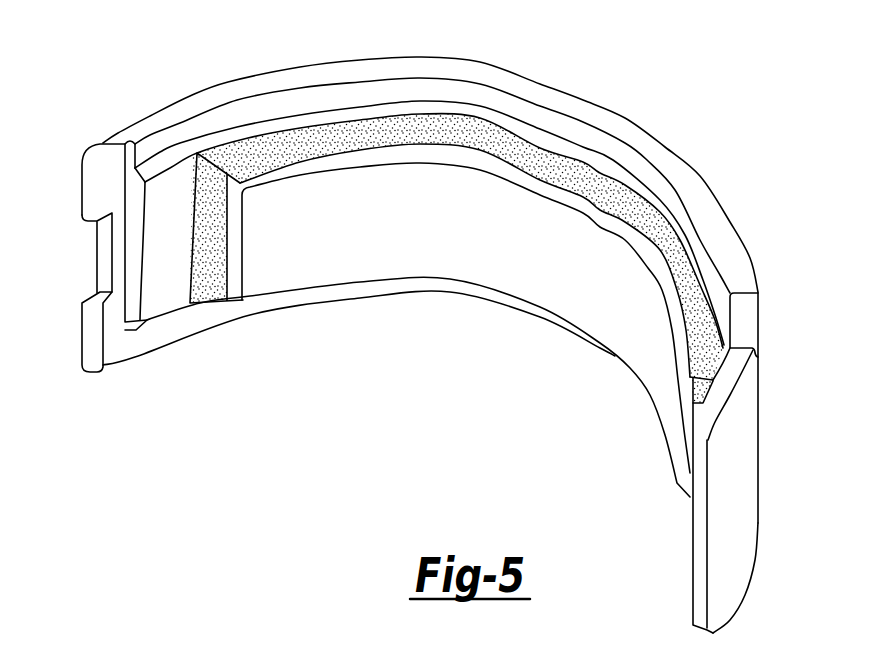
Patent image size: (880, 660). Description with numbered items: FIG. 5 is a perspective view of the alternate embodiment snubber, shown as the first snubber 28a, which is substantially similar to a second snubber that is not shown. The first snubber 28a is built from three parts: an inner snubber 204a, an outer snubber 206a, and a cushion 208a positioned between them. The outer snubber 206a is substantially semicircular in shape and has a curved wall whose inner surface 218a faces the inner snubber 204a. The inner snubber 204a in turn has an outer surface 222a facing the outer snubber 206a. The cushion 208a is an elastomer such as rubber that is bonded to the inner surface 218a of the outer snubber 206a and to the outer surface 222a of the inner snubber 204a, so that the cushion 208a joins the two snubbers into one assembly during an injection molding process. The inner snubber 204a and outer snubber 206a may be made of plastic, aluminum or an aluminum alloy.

The first snubber 28a is at (125, 415).
The inner snubber 204a is at (490, 262).
The outer snubber 206a is at (758, 258).
The cushion 208a is at (249, 142).
The inner surface 218a is at (163, 288).
The outer surface 222a is at (550, 174).